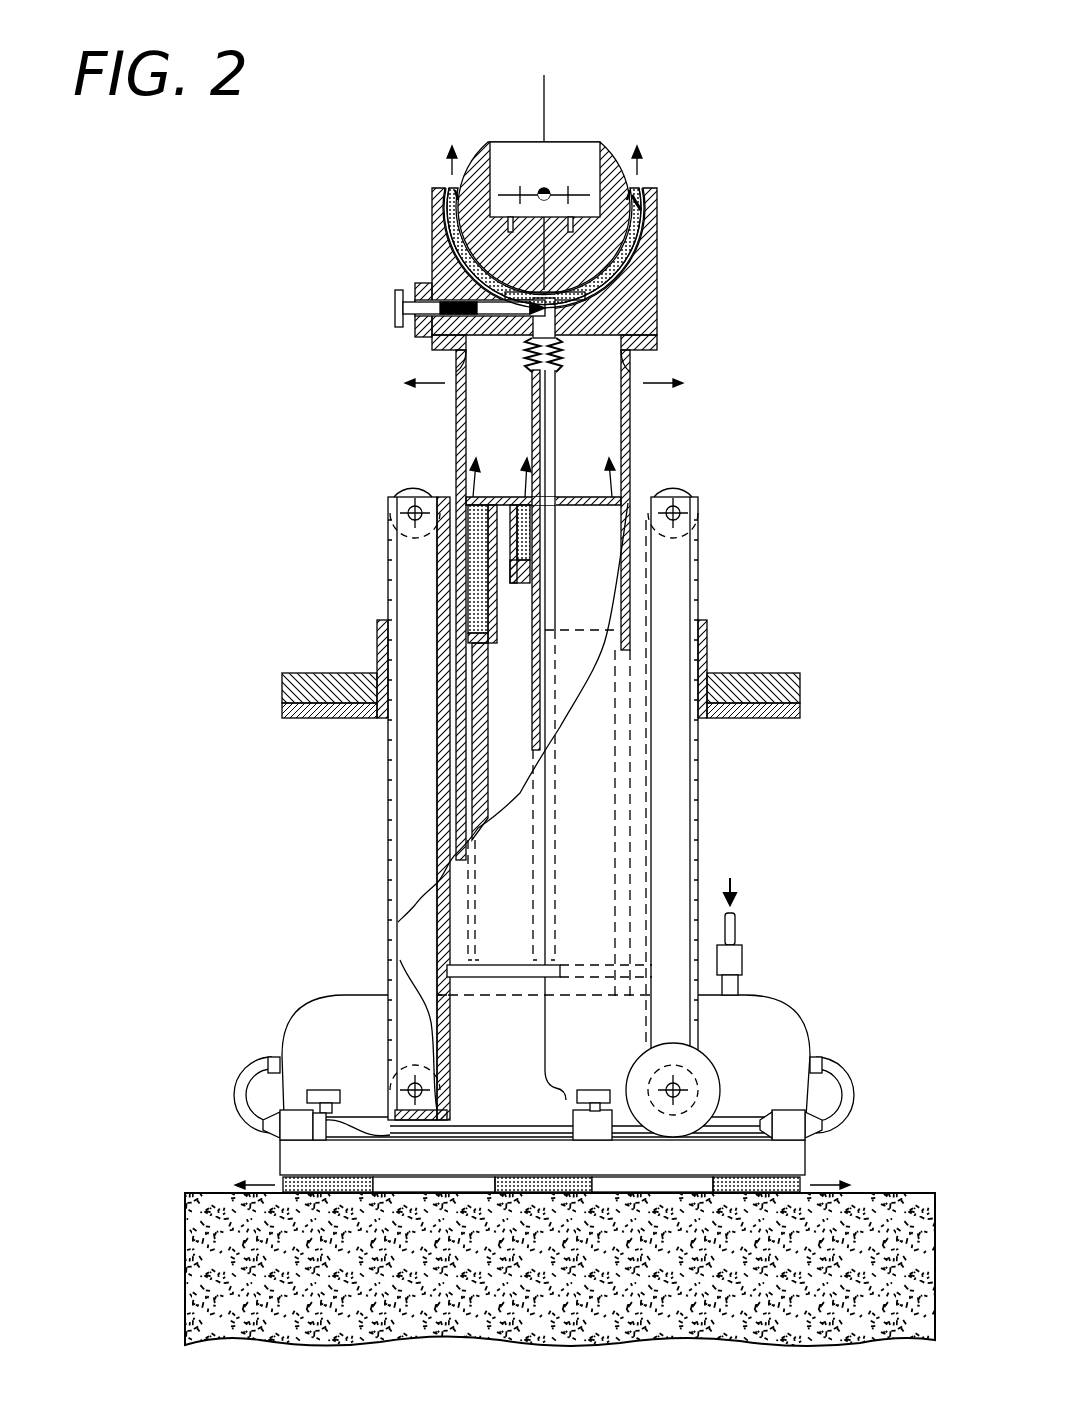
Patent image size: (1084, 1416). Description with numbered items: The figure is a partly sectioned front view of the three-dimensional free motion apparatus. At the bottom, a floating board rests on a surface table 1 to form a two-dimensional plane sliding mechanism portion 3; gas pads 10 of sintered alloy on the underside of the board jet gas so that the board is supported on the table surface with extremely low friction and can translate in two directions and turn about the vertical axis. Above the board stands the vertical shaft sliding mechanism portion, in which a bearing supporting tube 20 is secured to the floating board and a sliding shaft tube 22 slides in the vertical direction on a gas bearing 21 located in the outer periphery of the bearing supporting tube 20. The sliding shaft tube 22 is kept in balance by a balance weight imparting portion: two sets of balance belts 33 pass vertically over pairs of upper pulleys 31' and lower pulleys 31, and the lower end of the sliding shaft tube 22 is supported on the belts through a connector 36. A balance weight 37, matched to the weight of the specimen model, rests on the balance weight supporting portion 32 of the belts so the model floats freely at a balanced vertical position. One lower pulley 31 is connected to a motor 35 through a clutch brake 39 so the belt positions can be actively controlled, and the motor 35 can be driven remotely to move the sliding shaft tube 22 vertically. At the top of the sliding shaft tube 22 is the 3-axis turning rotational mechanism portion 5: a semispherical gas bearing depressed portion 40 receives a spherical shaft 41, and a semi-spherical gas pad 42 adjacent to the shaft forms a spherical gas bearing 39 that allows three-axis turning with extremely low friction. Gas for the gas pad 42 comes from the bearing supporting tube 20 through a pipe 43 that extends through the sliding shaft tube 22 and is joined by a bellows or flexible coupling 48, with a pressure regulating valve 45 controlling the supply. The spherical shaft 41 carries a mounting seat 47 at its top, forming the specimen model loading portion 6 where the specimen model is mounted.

The surface table 1 is at (203, 1190).
The two-dimensional 3-freedom plane sliding mechanism portion 3 is at (810, 1187).
The 3-axis turning rotational mechanism portion 5 is at (630, 257).
The specimen model loading portion 6 is at (572, 140).
The gas pads 10 is at (280, 1183).
The bearing supporting tube 20 is at (478, 720).
The gas bearing 21 is at (478, 580).
The sliding shaft tube 22 is at (630, 462).
The lower pulley 31 is at (551, 1068).
The upper pulley 31' is at (550, 495).
The balance weight supporting portion 32 is at (310, 718).
The balance belts 33 is at (390, 830).
The motor 35 is at (720, 1095).
The connector 36 is at (477, 962).
The balance weight 37 is at (328, 673).
The gas bearing 39 is at (645, 230).
The semispherical gas bearing depressed portion 40 is at (440, 213).
The spherical shaft 41 is at (623, 190).
The semi-spherical gas pad 42 is at (463, 247).
The pipe 43 is at (553, 415).
The pressure regulating valve 45 is at (393, 317).
The mounting seat 47 is at (509, 215).
The bellows or flexible coupling 48 is at (655, 345).